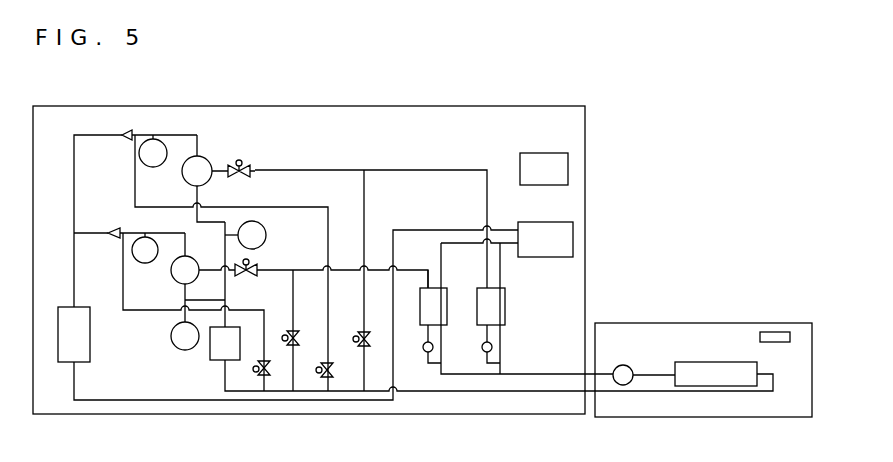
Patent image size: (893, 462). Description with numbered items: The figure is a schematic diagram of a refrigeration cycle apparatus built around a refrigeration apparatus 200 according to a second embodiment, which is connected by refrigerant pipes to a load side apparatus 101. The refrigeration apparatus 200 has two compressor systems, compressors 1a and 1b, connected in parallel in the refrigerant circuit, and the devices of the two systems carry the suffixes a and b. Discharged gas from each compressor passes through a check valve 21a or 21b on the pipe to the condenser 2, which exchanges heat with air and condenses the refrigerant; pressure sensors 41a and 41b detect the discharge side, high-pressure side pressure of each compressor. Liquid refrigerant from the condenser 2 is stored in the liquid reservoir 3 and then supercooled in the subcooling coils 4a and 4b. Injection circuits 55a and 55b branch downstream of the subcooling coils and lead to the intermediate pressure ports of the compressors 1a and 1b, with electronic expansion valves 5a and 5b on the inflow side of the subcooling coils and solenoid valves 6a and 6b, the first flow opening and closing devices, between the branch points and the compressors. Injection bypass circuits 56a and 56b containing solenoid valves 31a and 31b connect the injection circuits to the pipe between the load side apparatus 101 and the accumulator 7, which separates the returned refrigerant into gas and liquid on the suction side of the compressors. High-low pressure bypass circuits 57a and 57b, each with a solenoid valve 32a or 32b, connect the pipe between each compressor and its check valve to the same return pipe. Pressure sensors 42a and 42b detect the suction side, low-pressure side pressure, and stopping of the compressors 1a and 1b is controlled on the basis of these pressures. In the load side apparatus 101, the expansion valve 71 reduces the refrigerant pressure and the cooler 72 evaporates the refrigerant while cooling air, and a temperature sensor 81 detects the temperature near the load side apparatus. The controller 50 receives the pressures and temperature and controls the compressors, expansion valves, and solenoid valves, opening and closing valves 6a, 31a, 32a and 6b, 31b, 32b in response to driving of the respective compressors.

The compressor 1a is at (182, 171).
The compressor 1b is at (171, 270).
The condenser 2 is at (58, 308).
The liquid reservoir 3 is at (547, 222).
The subcooling coil 4a is at (505, 304).
The subcooling coil 4b is at (447, 304).
The electronic expansion valve 5a is at (481, 347).
The electronic expansion valve 5b is at (422, 347).
The solenoid valve 6a is at (238, 177).
The solenoid valve 6b is at (246, 276).
The accumulator 7 is at (209, 345).
The check valve 21a is at (122, 134).
The check valve 21b is at (110, 232).
The solenoid valve 31a is at (357, 345).
The solenoid valve 31b is at (286, 346).
The solenoid valve 32a is at (319, 374).
The solenoid valve 32b is at (258, 374).
The pressure sensor 41a is at (137, 157).
The pressure sensor 41b is at (125, 254).
The pressure sensor 42a is at (267, 235).
The pressure sensor 42b is at (170, 337).
The controller 50 is at (542, 152).
The injection circuit 55a is at (421, 171).
The injection circuit 55b is at (428, 270).
The injection bypass circuit 56a is at (364, 190).
The injection bypass circuit 56b is at (293, 293).
The high-low pressure bypass circuit 57a is at (135, 192).
The high-low pressure bypass circuit 57b is at (123, 289).
The expansion valve 71 is at (624, 367).
The cooler 72 is at (717, 362).
The temperature sensor 81 is at (770, 332).
The load side apparatus 101 is at (678, 320).
The refrigeration apparatus 200 is at (585, 158).